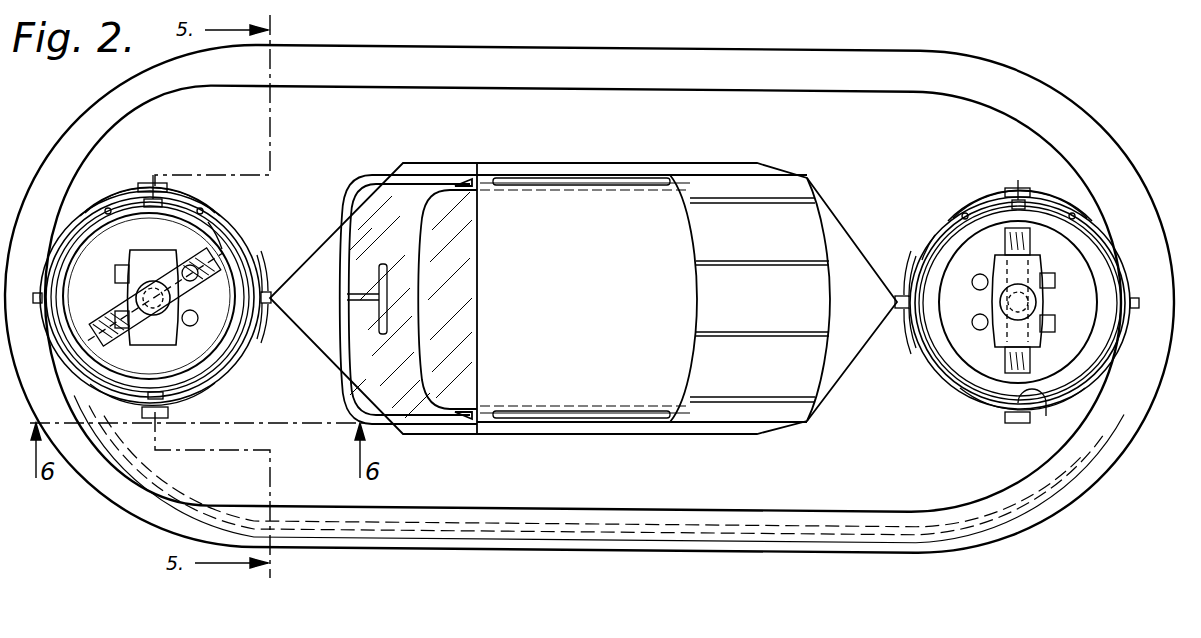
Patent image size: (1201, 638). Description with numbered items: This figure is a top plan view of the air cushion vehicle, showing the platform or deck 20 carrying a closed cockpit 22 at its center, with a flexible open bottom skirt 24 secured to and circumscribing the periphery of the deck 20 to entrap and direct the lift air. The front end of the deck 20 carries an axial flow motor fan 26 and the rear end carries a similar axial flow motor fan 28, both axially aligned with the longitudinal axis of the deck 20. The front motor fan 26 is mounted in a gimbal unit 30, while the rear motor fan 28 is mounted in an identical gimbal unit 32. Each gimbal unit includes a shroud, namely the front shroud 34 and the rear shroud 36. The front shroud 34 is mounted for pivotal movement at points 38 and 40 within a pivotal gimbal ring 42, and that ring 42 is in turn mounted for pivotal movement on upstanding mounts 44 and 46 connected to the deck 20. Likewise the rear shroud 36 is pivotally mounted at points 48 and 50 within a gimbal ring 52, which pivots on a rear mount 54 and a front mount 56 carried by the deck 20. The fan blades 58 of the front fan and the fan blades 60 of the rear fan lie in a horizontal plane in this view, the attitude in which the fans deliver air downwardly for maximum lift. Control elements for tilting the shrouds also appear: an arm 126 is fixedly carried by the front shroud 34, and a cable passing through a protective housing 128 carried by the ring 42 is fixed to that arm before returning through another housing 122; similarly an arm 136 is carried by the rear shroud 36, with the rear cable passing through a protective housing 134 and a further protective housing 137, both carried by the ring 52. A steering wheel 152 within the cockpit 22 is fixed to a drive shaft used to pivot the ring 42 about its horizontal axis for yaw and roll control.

The platform or deck 20 is at (583, 126).
The closed cockpit 22 is at (583, 291).
The flexible open bottom skirt 24 is at (406, 60).
The axial flow motor fan 26 is at (156, 258).
The axial flow motor fan 28 is at (997, 273).
The gimbal unit 30 is at (197, 200).
The gimbal unit 32 is at (1082, 195).
The shroud 34 is at (222, 247).
The shroud 36 is at (1097, 252).
The pivotal mounting 38 is at (138, 200).
The pivotal mounting 40 is at (184, 400).
The pivotal gimbal ring 42 is at (234, 372).
The upstanding mount 44 is at (37, 295).
The upstanding mount 46 is at (260, 318).
The pivotal mounting 48 is at (1020, 200).
The pivotal mounting 50 is at (1036, 402).
The gimbal ring 52 is at (968, 212).
The upstanding mount 54 is at (1130, 302).
The upstanding mount 56 is at (903, 293).
The fan blades 58 is at (101, 318).
The fan blades 60 is at (1032, 364).
The protective housing 122 is at (217, 388).
The arm 126 is at (161, 203).
The protective housing 128 is at (252, 268).
The protective housing 134 is at (938, 236).
The arm 136 is at (1040, 214).
The protective housing 137 is at (1000, 398).
The steering wheel 152 is at (389, 316).